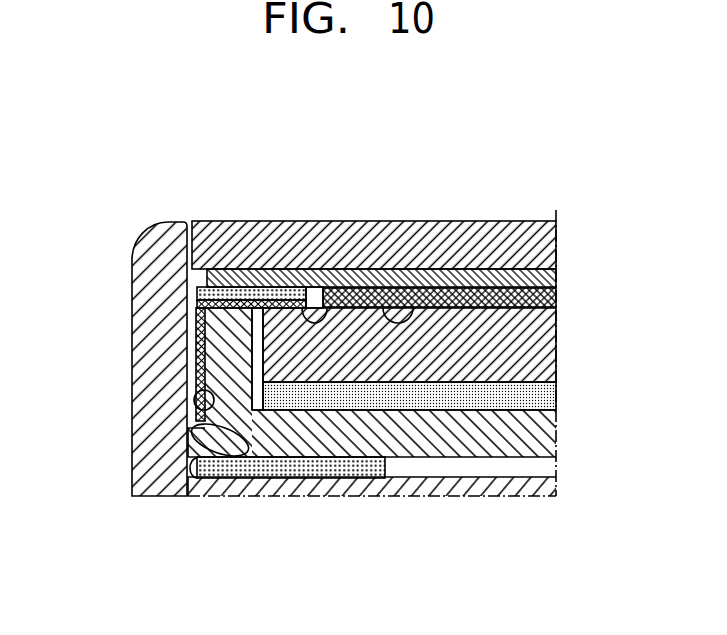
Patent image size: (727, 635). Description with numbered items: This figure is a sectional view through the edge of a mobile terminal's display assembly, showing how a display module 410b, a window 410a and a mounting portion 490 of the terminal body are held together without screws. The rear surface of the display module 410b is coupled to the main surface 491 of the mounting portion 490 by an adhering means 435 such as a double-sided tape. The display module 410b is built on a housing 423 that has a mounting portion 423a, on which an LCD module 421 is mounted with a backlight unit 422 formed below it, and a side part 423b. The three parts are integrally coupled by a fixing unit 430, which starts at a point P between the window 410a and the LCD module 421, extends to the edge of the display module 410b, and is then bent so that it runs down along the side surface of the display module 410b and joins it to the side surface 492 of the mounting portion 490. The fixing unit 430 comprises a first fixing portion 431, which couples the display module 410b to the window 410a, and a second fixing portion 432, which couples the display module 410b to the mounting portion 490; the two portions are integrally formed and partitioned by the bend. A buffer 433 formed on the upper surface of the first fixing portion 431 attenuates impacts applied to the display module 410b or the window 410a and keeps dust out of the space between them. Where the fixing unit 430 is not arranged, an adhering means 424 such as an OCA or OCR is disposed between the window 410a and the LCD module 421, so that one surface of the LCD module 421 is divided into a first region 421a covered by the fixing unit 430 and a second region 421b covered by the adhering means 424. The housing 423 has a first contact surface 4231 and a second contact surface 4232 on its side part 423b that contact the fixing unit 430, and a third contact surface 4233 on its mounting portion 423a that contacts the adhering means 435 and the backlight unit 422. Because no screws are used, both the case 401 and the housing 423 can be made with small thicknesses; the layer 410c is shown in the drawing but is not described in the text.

The case 401 is at (143, 463).
The window 410a is at (557, 247).
The display module 410b is at (252, 122).
The encapsulation layer 410c is at (557, 277).
The LCD module 421 is at (353, 161).
The first region 421a is at (338, 307).
The second region 421b is at (417, 310).
The backlight unit 422 is at (502, 388).
The housing 423 is at (218, 161).
The mounting portion of the housing 423a is at (297, 422).
The side part of the housing 423b is at (245, 308).
The first contact surface 4231 is at (211, 305).
The second contact surface 4232 is at (197, 405).
The third contact surface 4233 is at (193, 432).
The adhering means 424 is at (557, 298).
The fixing unit 430 is at (59, 302).
The first fixing portion 431 is at (205, 318).
The second fixing portion 432 is at (197, 357).
The buffer 433 is at (197, 290).
The adhering means 435 is at (343, 480).
The mounting portion 490 is at (178, 549).
The main surface 491 is at (280, 468).
The side surface 492 is at (198, 480).
The point P is at (312, 300).